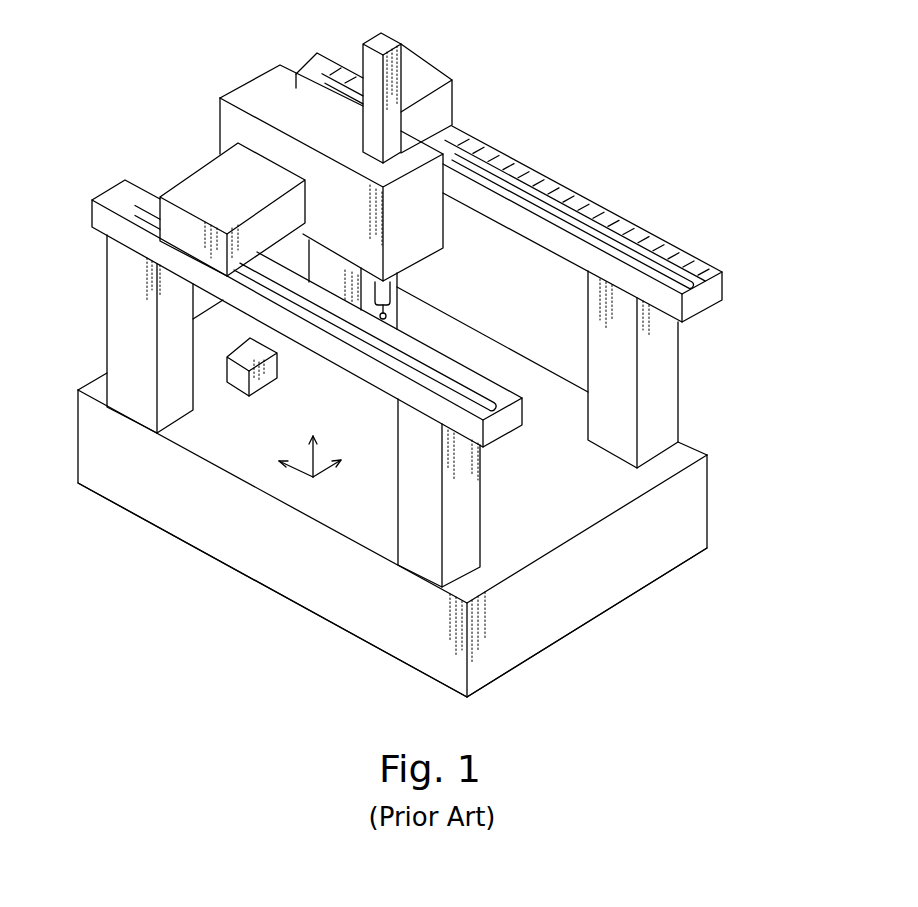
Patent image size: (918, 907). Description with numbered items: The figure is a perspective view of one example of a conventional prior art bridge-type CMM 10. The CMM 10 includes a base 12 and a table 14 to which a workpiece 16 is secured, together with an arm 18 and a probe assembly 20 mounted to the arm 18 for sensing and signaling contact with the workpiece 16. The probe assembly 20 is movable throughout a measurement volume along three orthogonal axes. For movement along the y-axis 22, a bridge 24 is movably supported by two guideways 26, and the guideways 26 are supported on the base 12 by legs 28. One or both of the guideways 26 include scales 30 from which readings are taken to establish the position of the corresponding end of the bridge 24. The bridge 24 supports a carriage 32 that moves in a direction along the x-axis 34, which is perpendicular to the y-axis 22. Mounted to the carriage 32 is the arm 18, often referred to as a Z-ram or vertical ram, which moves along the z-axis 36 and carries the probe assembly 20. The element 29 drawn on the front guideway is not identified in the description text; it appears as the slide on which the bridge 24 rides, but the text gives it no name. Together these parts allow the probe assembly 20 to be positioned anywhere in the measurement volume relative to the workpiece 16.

The bridge-type CMM 10 is at (530, 103).
The base 12 is at (198, 525).
The table 14 is at (373, 520).
The workpiece 16 is at (237, 372).
The arm 18 is at (393, 288).
The probe assembly 20 is at (390, 316).
The y-axis 22 is at (300, 472).
The bridge 24 is at (421, 70).
The guideways 26 is at (143, 197).
The legs 28 is at (115, 307).
The slide carriage 29 is at (182, 228).
The scales 30 is at (597, 203).
The carriage 32 is at (262, 82).
The x-axis 34 is at (323, 474).
The z-axis 36 is at (308, 457).